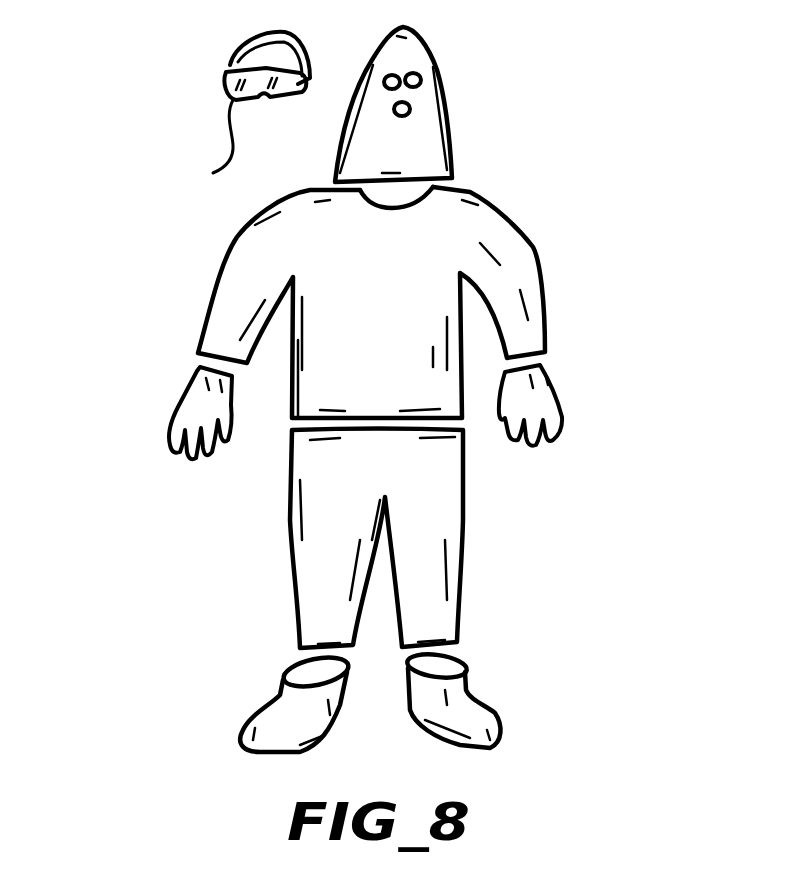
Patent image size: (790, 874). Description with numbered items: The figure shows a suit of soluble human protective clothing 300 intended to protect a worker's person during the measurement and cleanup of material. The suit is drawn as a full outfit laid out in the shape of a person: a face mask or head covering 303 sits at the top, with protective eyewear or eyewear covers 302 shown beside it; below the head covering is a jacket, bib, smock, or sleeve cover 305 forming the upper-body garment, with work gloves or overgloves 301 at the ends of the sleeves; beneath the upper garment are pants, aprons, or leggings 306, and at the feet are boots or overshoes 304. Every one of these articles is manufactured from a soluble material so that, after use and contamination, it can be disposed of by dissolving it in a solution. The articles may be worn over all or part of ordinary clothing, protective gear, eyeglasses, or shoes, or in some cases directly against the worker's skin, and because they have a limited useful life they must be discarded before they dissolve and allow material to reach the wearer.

The soluble human protective clothing 300 is at (660, 437).
The work gloves or overgloves 301 is at (180, 402).
The protective eyewear or eyewear covers 302 is at (227, 117).
The face masks or head coverings 303 is at (446, 132).
The boots or overshoes 304 is at (457, 713).
The jackets, bibs, smocks, or sleeve covers 305 is at (502, 255).
The pants, aprons, or leggings 306 is at (320, 565).